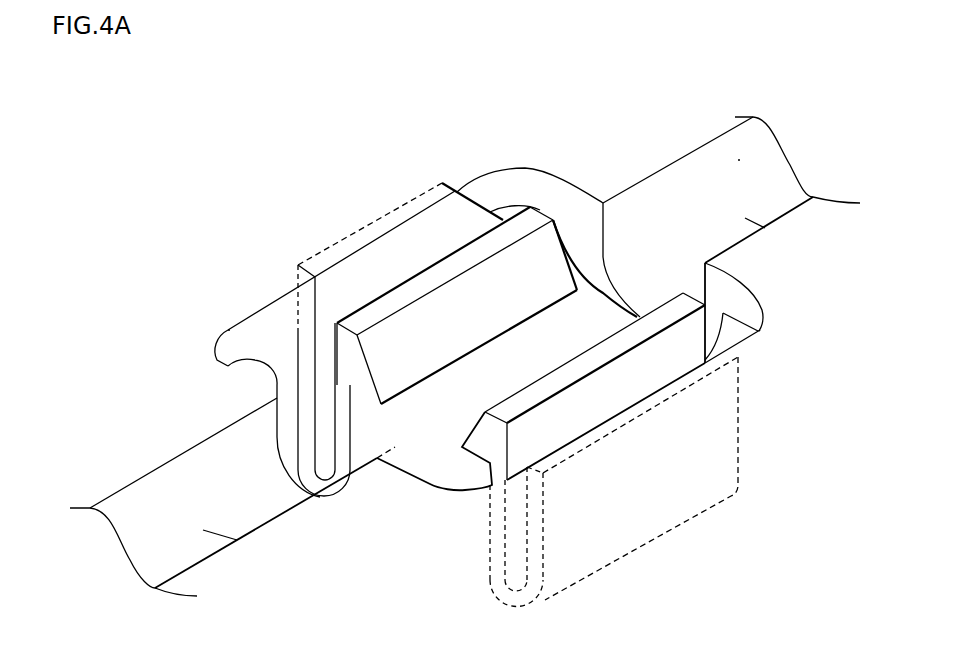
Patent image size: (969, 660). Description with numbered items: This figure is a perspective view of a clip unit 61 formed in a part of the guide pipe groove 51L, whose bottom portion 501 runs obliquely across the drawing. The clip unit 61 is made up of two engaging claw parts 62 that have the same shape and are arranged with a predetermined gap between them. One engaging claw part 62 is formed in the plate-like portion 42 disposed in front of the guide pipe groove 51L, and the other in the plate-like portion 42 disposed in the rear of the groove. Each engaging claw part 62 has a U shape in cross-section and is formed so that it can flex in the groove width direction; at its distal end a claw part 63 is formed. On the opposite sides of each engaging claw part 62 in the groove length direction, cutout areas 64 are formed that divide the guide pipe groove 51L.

The clip unit 61 is at (473, 152).
The engaging claw part 62 is at (307, 357).
The claw part 63 is at (508, 347).
The cutout area 64 is at (570, 203).
The bottom portion 501 is at (203, 530).
The plate-like portion 42 is at (147, 352).
The guide pipe groove 51L is at (162, 520).